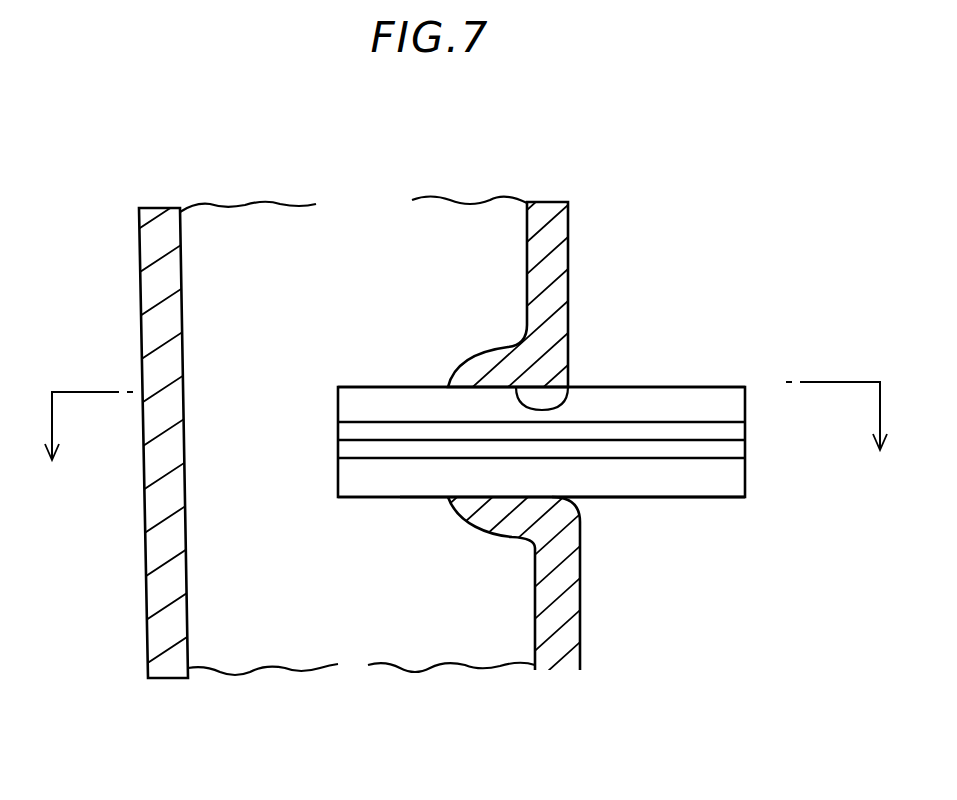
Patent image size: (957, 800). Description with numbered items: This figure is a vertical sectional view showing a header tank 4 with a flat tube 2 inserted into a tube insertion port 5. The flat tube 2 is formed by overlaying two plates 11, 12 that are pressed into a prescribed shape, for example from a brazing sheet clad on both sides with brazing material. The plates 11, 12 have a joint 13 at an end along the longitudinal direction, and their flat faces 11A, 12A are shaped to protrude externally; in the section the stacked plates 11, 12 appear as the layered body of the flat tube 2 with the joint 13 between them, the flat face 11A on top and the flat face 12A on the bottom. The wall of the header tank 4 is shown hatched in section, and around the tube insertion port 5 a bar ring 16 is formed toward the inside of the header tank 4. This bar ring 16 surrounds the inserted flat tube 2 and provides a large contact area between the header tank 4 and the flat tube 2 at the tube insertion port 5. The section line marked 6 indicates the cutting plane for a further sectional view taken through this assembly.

The flat tube 2 is at (698, 383).
The header tank 4 is at (143, 270).
The tube insertion port 5 is at (572, 388).
The section line 6- 6 is at (466, 442).
The plate 11 is at (672, 392).
The flat face 11A is at (650, 384).
The plate 12 is at (725, 485).
The flat face 12A is at (650, 498).
The joint 13 is at (728, 432).
The bar ring 16 is at (475, 372).